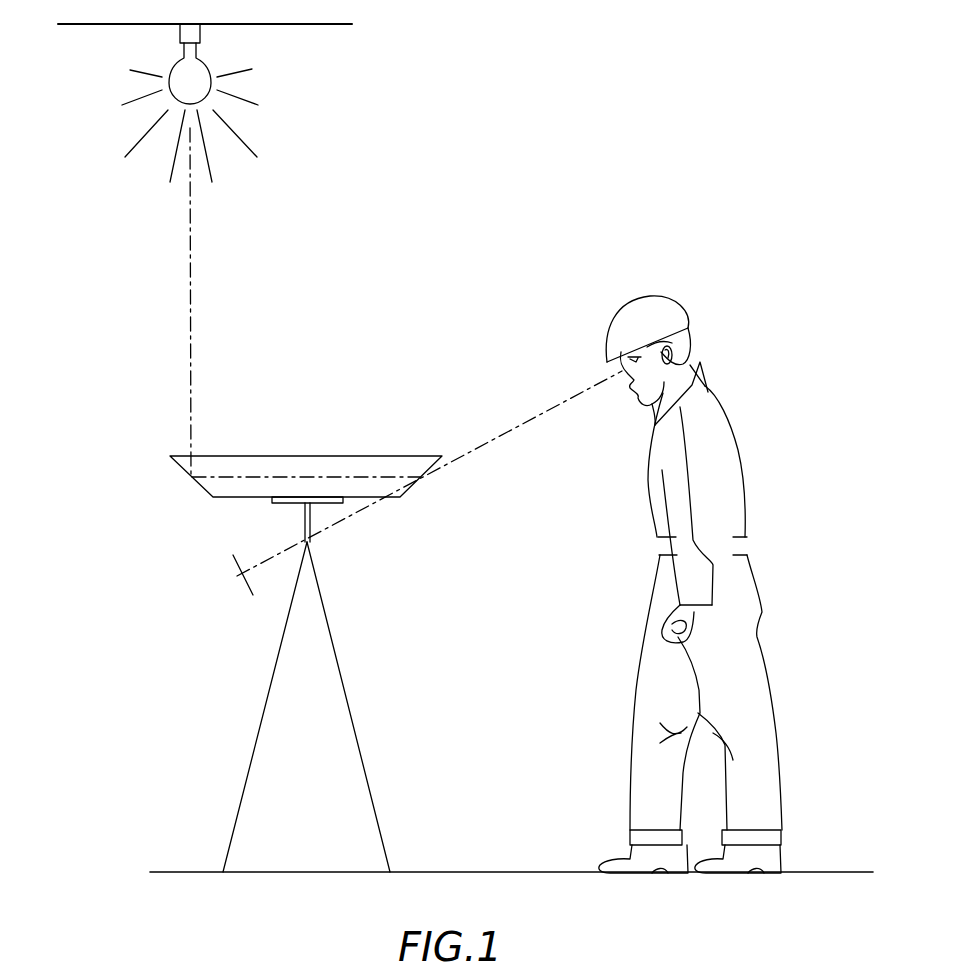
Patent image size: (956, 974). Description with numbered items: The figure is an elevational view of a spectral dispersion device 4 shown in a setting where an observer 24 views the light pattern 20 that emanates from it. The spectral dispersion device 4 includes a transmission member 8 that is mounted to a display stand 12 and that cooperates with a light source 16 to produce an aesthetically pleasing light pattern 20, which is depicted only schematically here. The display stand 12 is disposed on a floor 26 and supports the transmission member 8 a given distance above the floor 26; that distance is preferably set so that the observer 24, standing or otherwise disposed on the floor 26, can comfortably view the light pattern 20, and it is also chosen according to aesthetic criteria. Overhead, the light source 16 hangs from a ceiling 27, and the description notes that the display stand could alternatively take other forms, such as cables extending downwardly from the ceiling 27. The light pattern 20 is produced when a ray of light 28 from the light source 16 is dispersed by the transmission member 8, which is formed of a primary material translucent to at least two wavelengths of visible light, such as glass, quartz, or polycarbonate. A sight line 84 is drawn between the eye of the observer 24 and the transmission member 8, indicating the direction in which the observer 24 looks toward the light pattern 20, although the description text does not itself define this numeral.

The spectral dispersion device 4 is at (341, 379).
The transmission member 8 is at (250, 456).
The display stand 12 is at (262, 706).
The light source 16 is at (252, 87).
The light pattern 20 is at (232, 579).
The observer 24 is at (726, 408).
The floor 26 is at (823, 871).
The ceiling 27 is at (117, 27).
The ray of light 28 is at (193, 323).
The line of sight 84 is at (350, 521).